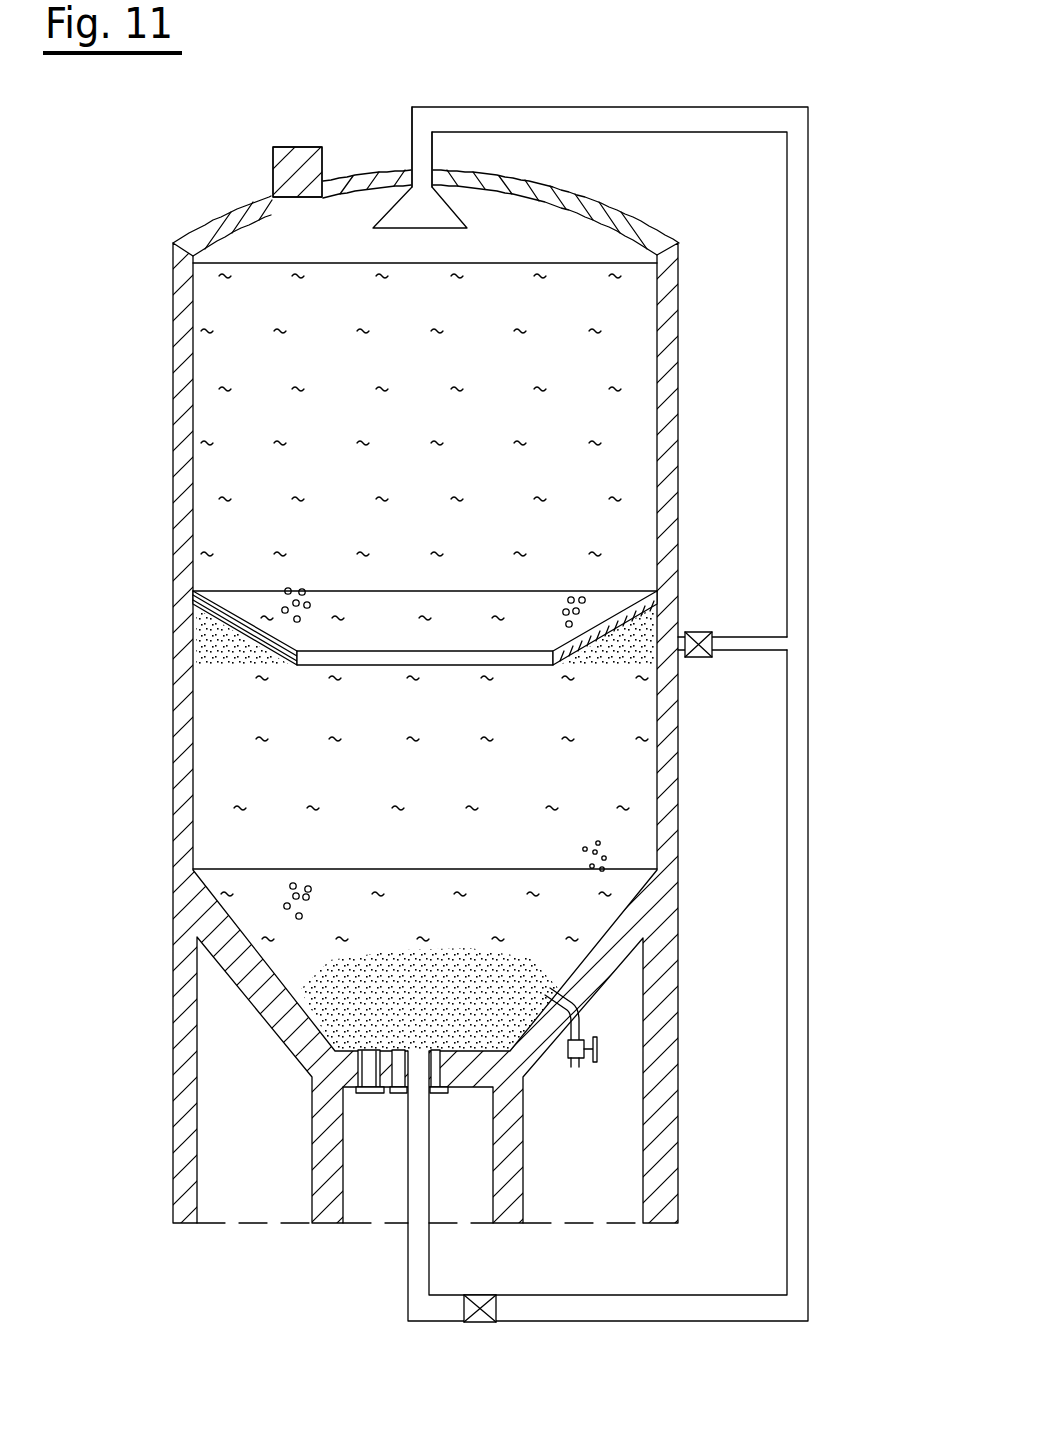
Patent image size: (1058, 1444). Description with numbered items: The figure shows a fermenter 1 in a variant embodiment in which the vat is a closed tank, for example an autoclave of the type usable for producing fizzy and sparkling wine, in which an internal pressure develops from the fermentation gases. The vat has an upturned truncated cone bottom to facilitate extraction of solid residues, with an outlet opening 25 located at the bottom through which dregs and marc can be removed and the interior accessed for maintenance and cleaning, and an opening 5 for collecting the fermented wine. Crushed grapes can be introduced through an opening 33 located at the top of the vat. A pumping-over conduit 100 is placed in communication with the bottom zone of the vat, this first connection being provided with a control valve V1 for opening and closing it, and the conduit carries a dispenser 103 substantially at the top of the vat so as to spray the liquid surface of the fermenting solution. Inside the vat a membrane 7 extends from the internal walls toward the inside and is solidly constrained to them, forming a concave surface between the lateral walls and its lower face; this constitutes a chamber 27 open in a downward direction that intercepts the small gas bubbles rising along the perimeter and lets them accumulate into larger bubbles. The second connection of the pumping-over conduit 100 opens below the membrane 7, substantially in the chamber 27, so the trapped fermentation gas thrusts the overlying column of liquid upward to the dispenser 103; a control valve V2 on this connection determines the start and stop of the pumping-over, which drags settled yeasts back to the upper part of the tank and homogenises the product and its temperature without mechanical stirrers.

The fermenter 1 is at (152, 144).
The opening at the top of the vat 33 is at (322, 127).
The dispenser 103 is at (440, 192).
The pumping-over conduit 100 is at (822, 246).
The membrane 7 is at (230, 592).
The control valve V2 is at (711, 609).
The chamber 27 is at (628, 662).
The outlet opening 25 is at (368, 1086).
The opening for collecting the fermented solution 5 is at (574, 1064).
The control valve V1 is at (447, 1339).